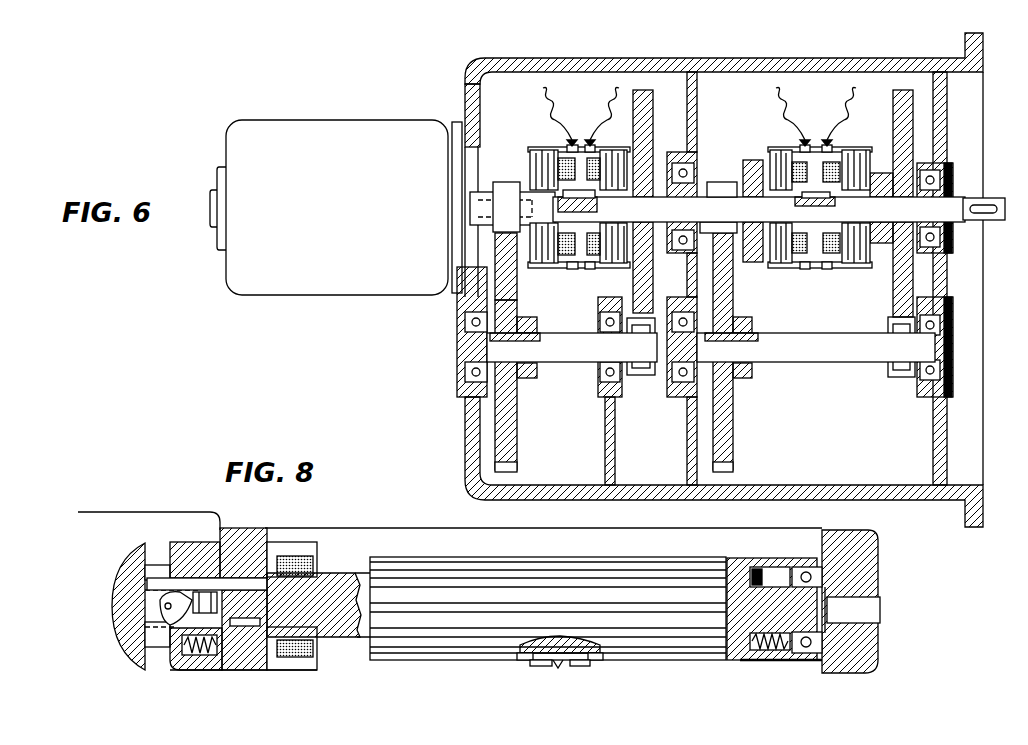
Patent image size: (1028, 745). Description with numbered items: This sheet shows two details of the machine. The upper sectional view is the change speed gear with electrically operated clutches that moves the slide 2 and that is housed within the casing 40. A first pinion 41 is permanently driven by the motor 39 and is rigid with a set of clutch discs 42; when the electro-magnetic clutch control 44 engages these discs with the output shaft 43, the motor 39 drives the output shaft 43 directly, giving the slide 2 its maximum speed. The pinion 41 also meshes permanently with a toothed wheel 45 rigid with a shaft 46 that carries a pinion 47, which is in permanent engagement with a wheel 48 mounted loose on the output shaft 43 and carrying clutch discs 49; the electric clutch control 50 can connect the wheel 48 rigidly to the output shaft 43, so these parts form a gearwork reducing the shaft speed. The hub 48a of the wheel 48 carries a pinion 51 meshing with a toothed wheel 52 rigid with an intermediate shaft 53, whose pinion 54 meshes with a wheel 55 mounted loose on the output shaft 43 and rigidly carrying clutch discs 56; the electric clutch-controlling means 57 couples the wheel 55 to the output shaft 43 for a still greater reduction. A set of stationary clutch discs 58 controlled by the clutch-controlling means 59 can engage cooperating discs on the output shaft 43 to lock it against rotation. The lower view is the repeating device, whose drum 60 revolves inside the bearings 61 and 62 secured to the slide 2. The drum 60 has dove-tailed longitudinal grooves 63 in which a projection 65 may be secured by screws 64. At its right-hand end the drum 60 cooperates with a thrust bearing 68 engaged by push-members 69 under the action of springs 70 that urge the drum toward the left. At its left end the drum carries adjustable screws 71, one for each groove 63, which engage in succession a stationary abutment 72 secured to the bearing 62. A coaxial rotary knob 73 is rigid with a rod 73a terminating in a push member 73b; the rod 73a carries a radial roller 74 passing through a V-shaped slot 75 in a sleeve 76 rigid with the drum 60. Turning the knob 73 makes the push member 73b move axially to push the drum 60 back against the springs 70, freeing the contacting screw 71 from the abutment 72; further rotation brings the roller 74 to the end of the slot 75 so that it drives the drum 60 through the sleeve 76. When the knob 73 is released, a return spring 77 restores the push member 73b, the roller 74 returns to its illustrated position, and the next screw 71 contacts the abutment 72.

In FIG. 8, the slide 2 is at (945, 513).
In FIG. 6, the motor 39 is at (300, 138).
In FIG. 6, the gear housing 40 is at (467, 444).
In FIG. 6, the first pinion 41 is at (503, 190).
In FIG. 6, the set of clutch discs 42 is at (537, 262).
In FIG. 6, the output shaft 43 is at (952, 200).
In FIG. 6, the electro-magnetic clutch control 44 is at (549, 150).
In FIG. 6, the toothed wheel 45 is at (515, 427).
In FIG. 6, the shaft 46 is at (570, 345).
In FIG. 6, the pinion 47 is at (644, 362).
In FIG. 6, the wheel 48 is at (645, 142).
In FIG. 6, the hub 48a is at (697, 185).
In FIG. 6, the set of clutch discs 49 is at (606, 268).
In FIG. 6, the electric clutch control 50 is at (605, 150).
In FIG. 6, the pinion 51 is at (722, 185).
In FIG. 6, the toothed wheel 52 is at (733, 404).
In FIG. 6, the intermediate shaft 53 is at (827, 345).
In FIG. 6, the pinion 54 is at (903, 362).
In FIG. 6, the wheel 55 is at (910, 122).
In FIG. 6, the set of clutch discs 56 is at (862, 268).
In FIG. 6, the electric clutch-controlling means 57 is at (844, 160).
In FIG. 6, the set of stationary clutch discs 58 is at (765, 255).
In FIG. 6, the electric clutch-controlling means 59 is at (790, 160).
In FIG. 8, the drum 60 is at (728, 655).
In FIG. 8, the bearing 61 is at (845, 540).
In FIG. 8, the bearing 62 is at (235, 655).
In FIG. 8, the longitudinally extending grooves 63 is at (658, 625).
In FIG. 8, the screws 64 is at (533, 665).
In FIG. 8, the projection 65 is at (575, 666).
In FIG. 8, the thrust bearing 68 is at (872, 638).
In FIG. 8, the push-members 69 is at (805, 656).
In FIG. 8, the springs 70 is at (770, 655).
In FIG. 8, the adjustable screws 71 is at (305, 660).
In FIG. 8, the stationary abutment 72 is at (278, 660).
In FIG. 8, the rotary knob 73 is at (125, 586).
In FIG. 8, the rod 73a is at (172, 655).
In FIG. 8, the push member 73b is at (195, 656).
In FIG. 8, the roller 74 is at (145, 632).
In FIG. 8, the V-shaped slot 75 is at (162, 568).
In FIG. 8, the sleeve 76 is at (158, 605).
In FIG. 8, the return spring 77 is at (210, 582).